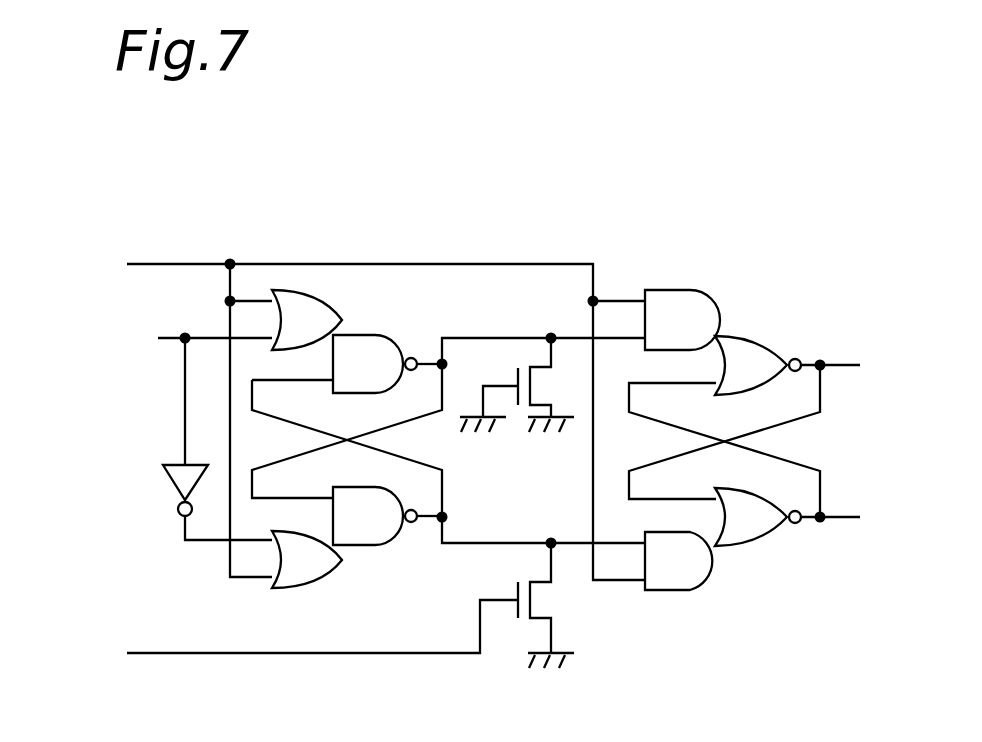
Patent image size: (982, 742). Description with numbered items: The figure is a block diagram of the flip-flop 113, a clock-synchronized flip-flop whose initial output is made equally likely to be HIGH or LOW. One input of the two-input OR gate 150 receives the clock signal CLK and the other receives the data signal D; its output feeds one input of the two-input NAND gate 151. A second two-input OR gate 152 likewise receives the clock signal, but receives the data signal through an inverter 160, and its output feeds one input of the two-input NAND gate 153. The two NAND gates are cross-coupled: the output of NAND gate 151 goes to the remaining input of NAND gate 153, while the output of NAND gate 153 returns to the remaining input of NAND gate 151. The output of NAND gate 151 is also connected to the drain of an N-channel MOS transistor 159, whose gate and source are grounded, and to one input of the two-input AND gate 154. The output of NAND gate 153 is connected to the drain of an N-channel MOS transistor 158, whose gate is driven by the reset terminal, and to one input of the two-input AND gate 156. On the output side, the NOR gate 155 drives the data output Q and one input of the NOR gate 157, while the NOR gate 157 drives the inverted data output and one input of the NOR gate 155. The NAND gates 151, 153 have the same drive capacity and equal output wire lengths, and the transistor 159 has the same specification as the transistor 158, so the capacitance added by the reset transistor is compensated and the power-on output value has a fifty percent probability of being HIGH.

The flip-flop 113 is at (378, 225).
The 2-input OR gate 150 is at (325, 293).
The 2-input NAND gate 151 is at (393, 333).
The 2-input OR gate 152 is at (290, 590).
The 2-input NAND gate 153 is at (366, 547).
The 2-input AND gate 154 is at (665, 290).
The NOR gate 155 is at (760, 336).
The 2-input AND gate 156 is at (662, 592).
The NOR gate 157 is at (742, 549).
The N-channel MOS transistor 158 is at (515, 591).
The N-channel MOS transistor 159 is at (548, 336).
The inverter 160 is at (168, 488).